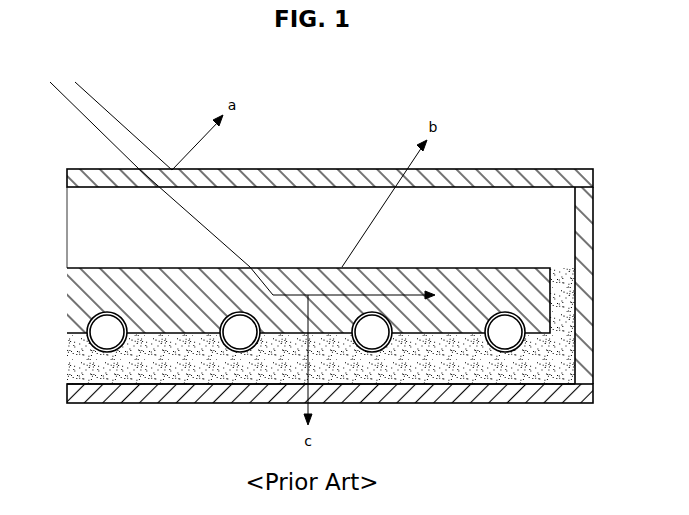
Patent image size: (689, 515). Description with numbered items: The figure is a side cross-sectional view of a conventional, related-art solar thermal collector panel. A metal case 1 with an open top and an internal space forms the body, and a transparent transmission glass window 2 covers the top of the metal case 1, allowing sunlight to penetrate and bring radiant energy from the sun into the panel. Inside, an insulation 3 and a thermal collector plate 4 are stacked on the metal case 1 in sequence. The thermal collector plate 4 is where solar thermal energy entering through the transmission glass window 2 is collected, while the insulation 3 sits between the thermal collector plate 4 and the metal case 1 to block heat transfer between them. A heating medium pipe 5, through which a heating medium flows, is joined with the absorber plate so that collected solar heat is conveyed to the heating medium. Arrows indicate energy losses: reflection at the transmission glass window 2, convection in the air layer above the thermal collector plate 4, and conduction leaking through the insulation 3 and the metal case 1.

The metal case 1 is at (97, 403).
The transmission glass window 2 is at (521, 169).
The insulation 3 is at (82, 368).
The thermal collector plate 4 is at (80, 295).
The heating medium pipe 5 is at (98, 338).